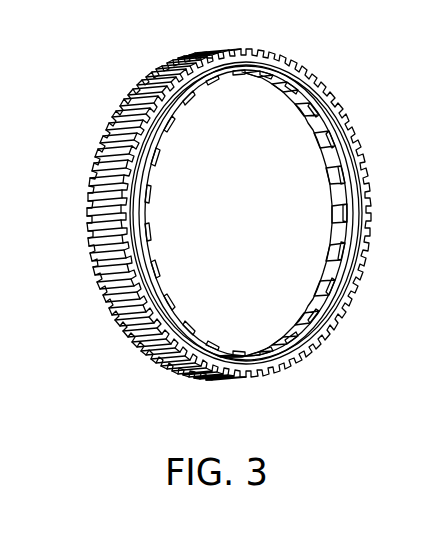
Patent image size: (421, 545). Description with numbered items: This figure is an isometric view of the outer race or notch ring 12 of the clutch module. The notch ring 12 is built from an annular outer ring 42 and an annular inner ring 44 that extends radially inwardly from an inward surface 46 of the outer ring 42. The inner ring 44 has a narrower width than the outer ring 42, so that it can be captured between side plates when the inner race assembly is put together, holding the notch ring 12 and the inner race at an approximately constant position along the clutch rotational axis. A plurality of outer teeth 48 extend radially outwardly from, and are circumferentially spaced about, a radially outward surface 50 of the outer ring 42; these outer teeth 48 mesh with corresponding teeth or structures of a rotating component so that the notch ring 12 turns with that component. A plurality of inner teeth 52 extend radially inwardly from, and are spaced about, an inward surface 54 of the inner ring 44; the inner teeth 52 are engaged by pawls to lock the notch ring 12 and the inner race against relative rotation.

The notch ring 12 is at (231, 199).
The outer ring 42 is at (336, 113).
The inner ring 44 is at (322, 124).
The inward surface 46 is at (356, 176).
The outer teeth 48 is at (107, 213).
The radially outward surface 50 is at (112, 265).
The inner teeth 52 is at (334, 214).
The inward surface 54 is at (340, 233).